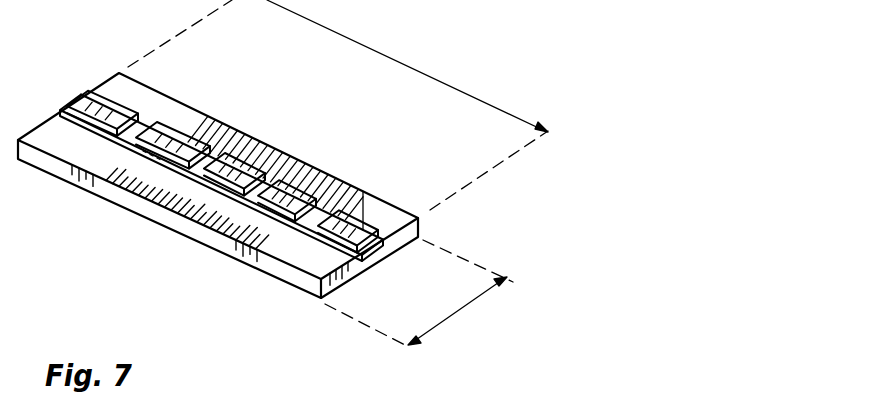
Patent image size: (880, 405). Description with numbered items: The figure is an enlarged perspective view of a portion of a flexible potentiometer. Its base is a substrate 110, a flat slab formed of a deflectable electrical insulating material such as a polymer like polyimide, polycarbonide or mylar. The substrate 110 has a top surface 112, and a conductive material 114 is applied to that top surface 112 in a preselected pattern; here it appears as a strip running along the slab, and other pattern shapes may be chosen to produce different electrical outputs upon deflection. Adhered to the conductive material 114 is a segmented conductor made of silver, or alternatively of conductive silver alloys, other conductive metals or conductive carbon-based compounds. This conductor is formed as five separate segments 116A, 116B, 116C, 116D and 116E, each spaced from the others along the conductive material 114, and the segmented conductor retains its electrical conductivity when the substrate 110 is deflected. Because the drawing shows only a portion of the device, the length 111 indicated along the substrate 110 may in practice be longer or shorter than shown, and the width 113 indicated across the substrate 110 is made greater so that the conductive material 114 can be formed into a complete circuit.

The substrate 110 is at (398, 202).
The length 111 is at (380, 52).
The top surface 112 is at (293, 163).
The width 113 is at (457, 310).
The conductive material 114 is at (351, 184).
The segment 116A is at (120, 110).
The segment 116B is at (223, 160).
The segment 116C is at (272, 203).
The segment 116D is at (318, 238).
The segment 116E is at (163, 120).